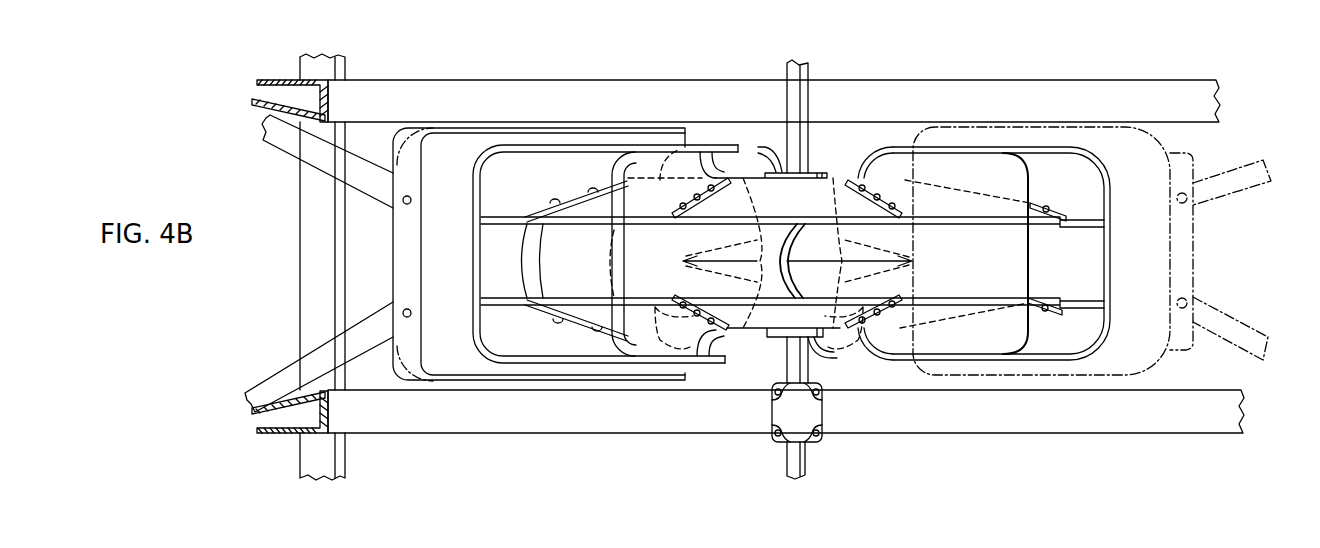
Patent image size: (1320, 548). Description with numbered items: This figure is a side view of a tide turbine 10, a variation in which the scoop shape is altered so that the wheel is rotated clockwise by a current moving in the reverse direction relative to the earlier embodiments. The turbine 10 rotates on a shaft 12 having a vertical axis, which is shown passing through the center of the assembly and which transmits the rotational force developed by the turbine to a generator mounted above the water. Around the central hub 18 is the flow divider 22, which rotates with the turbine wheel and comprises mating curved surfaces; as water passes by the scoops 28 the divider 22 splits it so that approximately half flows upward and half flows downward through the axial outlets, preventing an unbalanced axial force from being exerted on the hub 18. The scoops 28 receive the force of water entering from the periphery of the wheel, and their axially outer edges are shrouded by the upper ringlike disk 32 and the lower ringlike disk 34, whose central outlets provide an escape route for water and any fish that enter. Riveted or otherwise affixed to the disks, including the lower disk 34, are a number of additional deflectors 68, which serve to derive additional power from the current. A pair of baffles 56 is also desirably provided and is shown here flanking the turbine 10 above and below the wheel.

The tide turbine 10 is at (746, 348).
The shaft 12 is at (810, 108).
The central hub 18 is at (772, 338).
The flow divider 22 is at (877, 250).
The scoop 28 is at (789, 248).
The baffle 56 is at (478, 382).
The deflector 68 is at (652, 150).
The upper ringlike disk 32 is at (833, 193).
The lower ringlike disk 34 is at (845, 333).